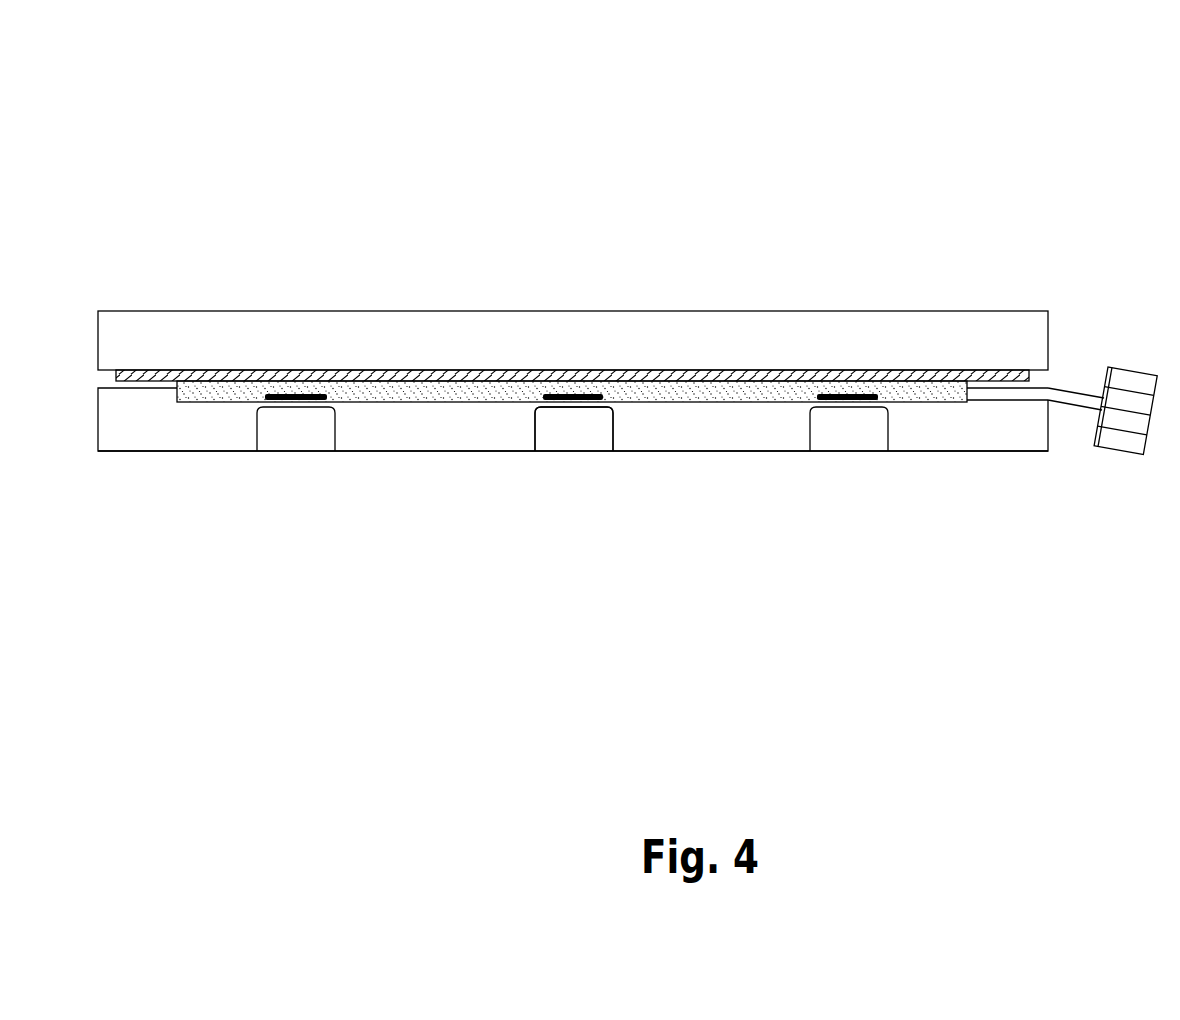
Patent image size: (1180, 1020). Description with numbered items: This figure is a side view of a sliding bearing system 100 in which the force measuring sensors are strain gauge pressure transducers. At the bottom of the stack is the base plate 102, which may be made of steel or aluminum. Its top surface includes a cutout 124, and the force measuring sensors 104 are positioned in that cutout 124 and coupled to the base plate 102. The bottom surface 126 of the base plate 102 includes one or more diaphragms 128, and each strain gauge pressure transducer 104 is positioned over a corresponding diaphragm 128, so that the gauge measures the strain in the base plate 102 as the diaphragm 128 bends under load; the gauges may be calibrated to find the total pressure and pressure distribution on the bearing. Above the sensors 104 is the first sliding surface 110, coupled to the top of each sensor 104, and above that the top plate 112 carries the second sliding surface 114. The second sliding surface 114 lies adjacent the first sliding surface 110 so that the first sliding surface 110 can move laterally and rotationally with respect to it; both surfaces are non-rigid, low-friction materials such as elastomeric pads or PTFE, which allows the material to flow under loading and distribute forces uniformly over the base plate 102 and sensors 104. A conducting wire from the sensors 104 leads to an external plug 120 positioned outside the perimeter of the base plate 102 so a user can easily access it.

The sliding bearing system 100 is at (627, 331).
The base plate 102 is at (364, 464).
The force measuring sensors 104 is at (618, 416).
The first sliding surface 110 is at (776, 413).
The top plate 112 is at (724, 299).
The second sliding surface 114 is at (380, 359).
The external plug 120 is at (1108, 359).
The cutout 124 is at (492, 388).
The bottom surface 126 is at (462, 459).
The diaphragms 128 is at (527, 458).